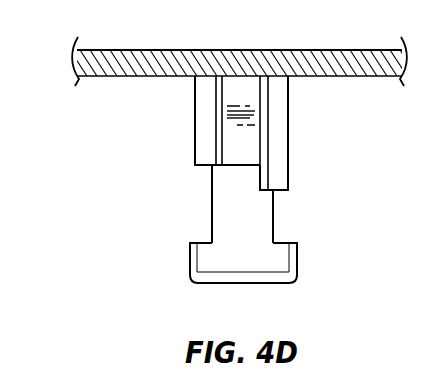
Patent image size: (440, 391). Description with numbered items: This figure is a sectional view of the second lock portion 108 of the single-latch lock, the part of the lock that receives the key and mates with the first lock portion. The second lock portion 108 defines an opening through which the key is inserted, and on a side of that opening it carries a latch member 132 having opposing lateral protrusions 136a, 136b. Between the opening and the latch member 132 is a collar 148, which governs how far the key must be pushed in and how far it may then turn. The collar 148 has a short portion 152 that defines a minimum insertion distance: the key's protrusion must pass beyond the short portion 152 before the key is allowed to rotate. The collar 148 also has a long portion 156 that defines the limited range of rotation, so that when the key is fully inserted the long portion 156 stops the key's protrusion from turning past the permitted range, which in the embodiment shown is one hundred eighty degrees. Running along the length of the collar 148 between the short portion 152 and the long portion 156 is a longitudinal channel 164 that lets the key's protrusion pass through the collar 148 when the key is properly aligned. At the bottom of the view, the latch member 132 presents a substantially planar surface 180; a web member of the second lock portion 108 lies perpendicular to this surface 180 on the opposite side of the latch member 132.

The second lock portion 108 is at (305, 212).
The latch member 132 is at (270, 283).
The lateral protrusion 136a is at (283, 241).
The lateral protrusion 136b is at (203, 243).
The collar 148 is at (288, 132).
The short portion 152 is at (203, 168).
The long portion 156 is at (277, 191).
The longitudinal channel 164 is at (228, 136).
The planar surface 180 is at (237, 233).